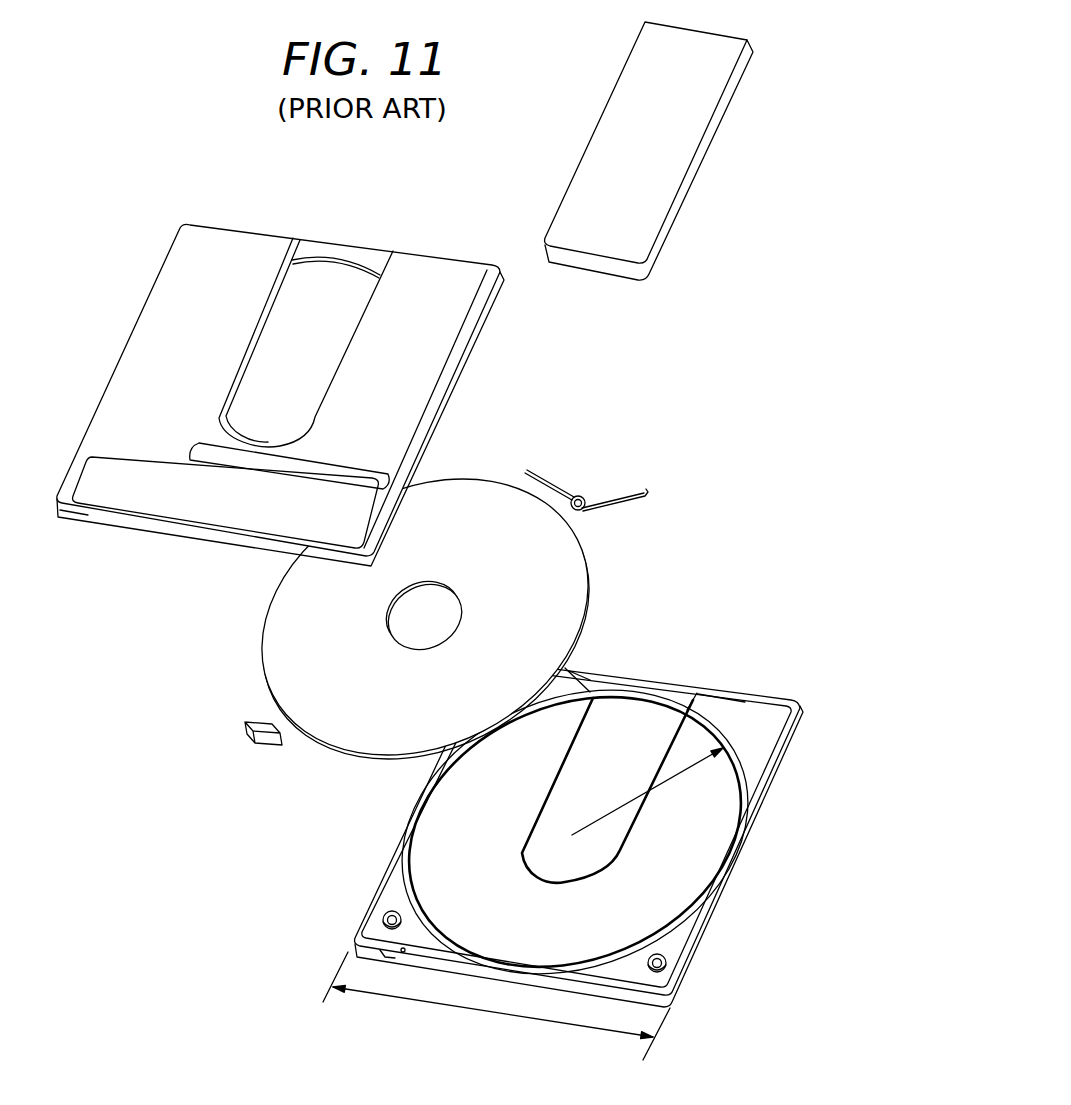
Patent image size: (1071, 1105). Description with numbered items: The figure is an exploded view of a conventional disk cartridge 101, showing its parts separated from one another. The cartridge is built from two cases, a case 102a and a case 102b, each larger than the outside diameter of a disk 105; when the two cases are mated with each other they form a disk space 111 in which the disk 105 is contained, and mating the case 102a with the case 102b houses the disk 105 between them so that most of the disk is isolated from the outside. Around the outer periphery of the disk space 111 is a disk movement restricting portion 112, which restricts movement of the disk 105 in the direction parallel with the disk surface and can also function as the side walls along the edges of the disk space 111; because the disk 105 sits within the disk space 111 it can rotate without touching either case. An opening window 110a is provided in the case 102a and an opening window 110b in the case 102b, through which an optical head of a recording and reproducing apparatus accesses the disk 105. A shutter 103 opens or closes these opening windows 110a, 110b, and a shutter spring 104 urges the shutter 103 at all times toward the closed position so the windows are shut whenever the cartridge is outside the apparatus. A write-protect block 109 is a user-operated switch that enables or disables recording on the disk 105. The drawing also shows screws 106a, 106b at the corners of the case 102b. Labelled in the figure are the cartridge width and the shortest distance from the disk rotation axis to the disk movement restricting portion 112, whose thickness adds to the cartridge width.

The disk cartridge 101 is at (527, 849).
The case 102a is at (319, 370).
The case 102b is at (728, 888).
The shutter 103 is at (587, 243).
The shutter spring 104 is at (613, 510).
The disk 105 is at (283, 610).
The screw 106a is at (380, 912).
The screw 106b is at (668, 962).
The write-protect block 109 is at (247, 723).
The opening window 110a is at (317, 278).
The opening window 110b is at (635, 717).
The disk space 111 is at (700, 823).
The disk movement restricting portion 112 is at (717, 723).